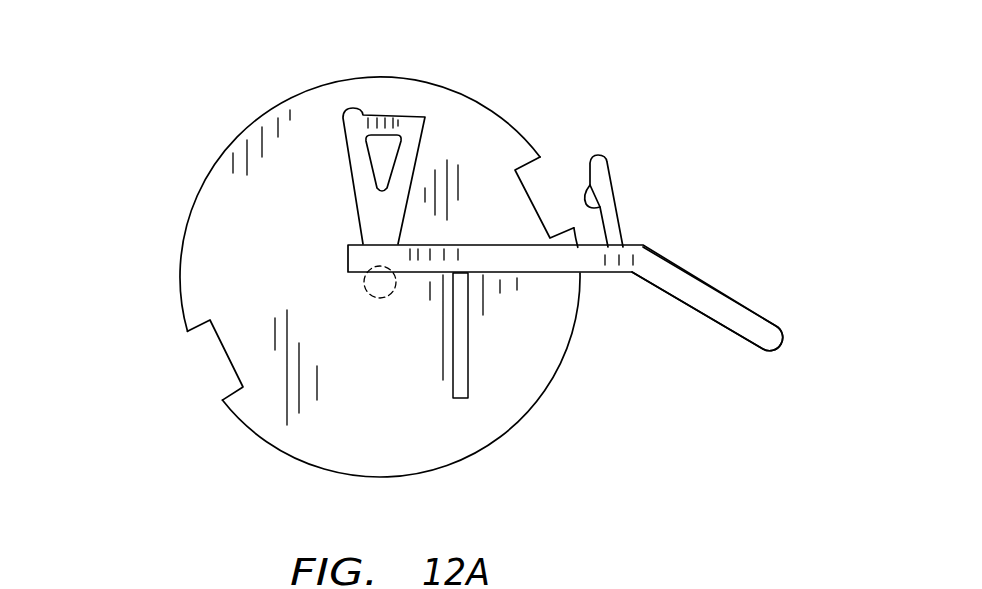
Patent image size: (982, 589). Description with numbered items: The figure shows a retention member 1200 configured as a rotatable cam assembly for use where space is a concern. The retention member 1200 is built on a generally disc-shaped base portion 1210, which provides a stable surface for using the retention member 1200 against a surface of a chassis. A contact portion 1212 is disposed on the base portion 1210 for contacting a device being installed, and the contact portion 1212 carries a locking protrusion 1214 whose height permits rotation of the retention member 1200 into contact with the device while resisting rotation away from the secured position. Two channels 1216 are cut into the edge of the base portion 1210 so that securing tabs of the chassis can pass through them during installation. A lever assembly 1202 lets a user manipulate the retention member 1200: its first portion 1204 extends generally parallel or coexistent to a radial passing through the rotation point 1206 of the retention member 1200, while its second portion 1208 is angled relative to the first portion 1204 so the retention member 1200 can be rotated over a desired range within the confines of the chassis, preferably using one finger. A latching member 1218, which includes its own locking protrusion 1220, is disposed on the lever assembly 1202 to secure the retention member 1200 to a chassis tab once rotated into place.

The retention member 1200 is at (135, 183).
The lever assembly 1202 is at (652, 335).
The first portion 1204 is at (592, 273).
The rotation point 1206 is at (365, 278).
The second portion 1208 is at (718, 288).
The base portion 1210 is at (495, 440).
The contact portion 1212 is at (402, 65).
The locking protrusion 1214 is at (347, 110).
The channels 1216 is at (537, 182).
The latching member 1218 is at (617, 202).
The locking protrusion 1220 is at (607, 165).